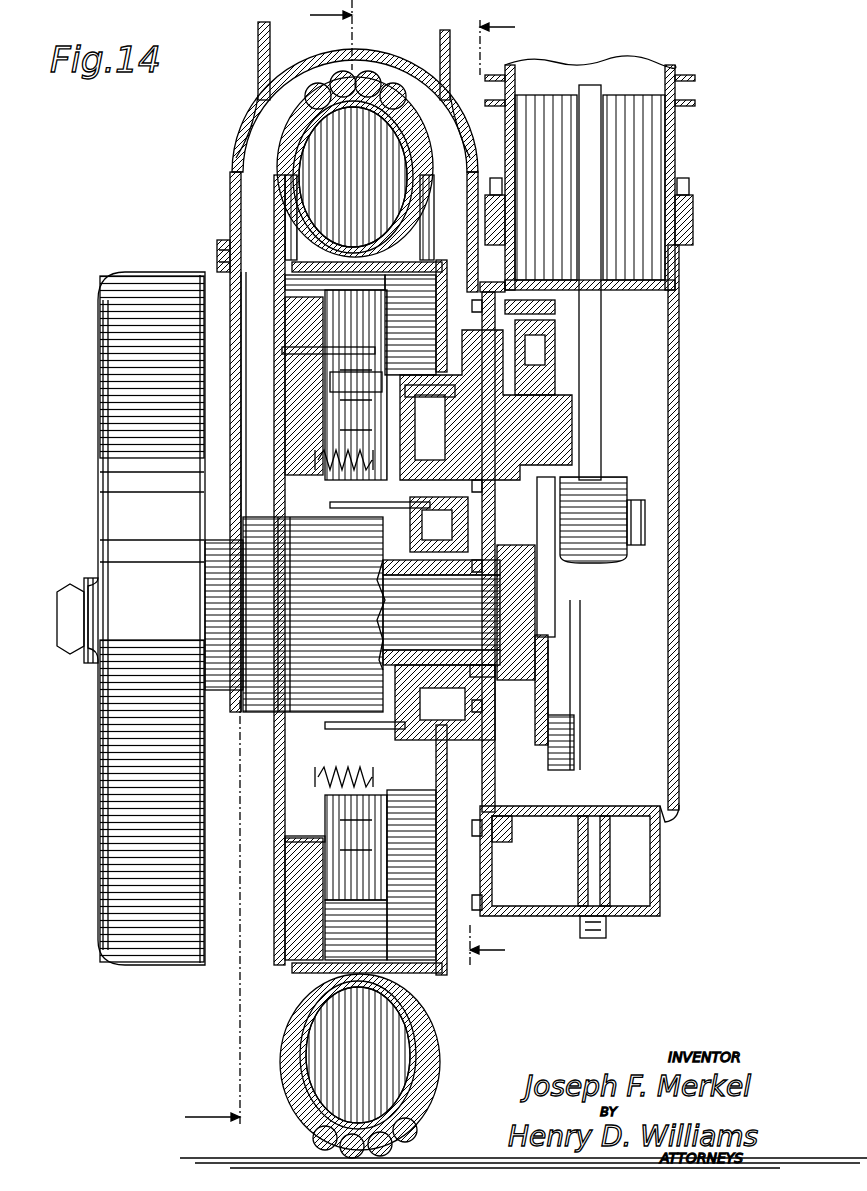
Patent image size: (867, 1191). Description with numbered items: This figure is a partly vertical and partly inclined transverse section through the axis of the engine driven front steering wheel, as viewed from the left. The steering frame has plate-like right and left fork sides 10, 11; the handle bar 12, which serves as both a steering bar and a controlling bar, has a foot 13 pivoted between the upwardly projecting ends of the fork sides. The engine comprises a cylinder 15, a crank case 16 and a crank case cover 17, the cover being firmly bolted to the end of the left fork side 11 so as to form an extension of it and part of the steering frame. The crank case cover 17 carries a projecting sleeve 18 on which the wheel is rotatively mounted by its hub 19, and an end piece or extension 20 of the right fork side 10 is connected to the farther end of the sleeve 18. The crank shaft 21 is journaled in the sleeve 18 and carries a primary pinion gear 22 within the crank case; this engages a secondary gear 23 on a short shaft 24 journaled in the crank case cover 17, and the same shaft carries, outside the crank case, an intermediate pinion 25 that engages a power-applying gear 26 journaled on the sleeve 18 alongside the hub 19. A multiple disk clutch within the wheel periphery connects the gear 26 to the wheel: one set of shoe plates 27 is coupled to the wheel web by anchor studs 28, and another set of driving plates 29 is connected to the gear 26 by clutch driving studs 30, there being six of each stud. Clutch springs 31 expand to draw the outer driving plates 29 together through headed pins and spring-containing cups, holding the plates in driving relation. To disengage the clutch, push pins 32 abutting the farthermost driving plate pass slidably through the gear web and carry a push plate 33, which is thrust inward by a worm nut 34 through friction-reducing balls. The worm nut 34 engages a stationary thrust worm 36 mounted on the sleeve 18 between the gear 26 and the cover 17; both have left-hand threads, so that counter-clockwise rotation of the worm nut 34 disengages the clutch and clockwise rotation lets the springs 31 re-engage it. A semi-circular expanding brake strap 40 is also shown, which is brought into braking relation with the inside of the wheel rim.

The right fork side 10 is at (258, 36).
The left fork side 11 is at (440, 40).
The handle bar 12 is at (490, 514).
The foot 13 is at (268, 579).
The cylinder 15 is at (668, 152).
The crank case 16 is at (679, 510).
The crank case cover 17 is at (490, 748).
The sleeve 18 is at (226, 600).
The hub 19 is at (294, 614).
The end piece or extension 20 is at (236, 300).
The crank shaft 21 is at (540, 616).
The primary pinion gear 22 is at (540, 694).
The secondary gear 23 is at (520, 318).
The short shaft 24 is at (560, 422).
The intermediate pinion 25 is at (437, 388).
The power-applying gear 26 is at (437, 505).
The shoe plates 27 is at (368, 345).
The anchor studs 28 is at (297, 352).
The driving plates 29 is at (330, 408).
The clutch driving studs 30 is at (330, 728).
The clutch springs 31 is at (325, 455).
The push pins 32 is at (335, 504).
The push plate 33 is at (432, 732).
The worm nut 34 is at (470, 712).
The thrust worm 36 is at (450, 648).
The brake strap 40 is at (440, 292).